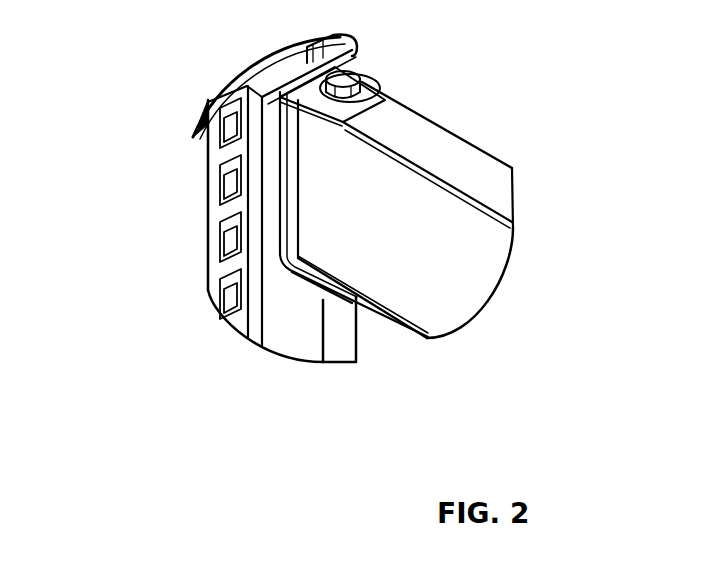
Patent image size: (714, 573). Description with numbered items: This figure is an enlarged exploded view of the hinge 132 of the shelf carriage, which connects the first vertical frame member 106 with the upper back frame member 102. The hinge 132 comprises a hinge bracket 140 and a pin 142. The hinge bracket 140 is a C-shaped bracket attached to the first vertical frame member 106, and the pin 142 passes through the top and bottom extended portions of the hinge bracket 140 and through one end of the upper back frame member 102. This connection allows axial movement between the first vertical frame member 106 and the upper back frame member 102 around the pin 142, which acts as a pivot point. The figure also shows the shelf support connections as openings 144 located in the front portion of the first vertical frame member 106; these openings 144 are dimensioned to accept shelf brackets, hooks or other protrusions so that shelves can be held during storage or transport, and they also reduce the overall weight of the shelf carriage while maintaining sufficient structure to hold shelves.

The hinge 132 is at (92, 73).
The first vertical frame member 106 is at (208, 263).
The openings 144 is at (222, 184).
The pin 142 is at (349, 86).
The upper back frame member 102 is at (462, 280).
The hinge bracket 140 is at (323, 300).